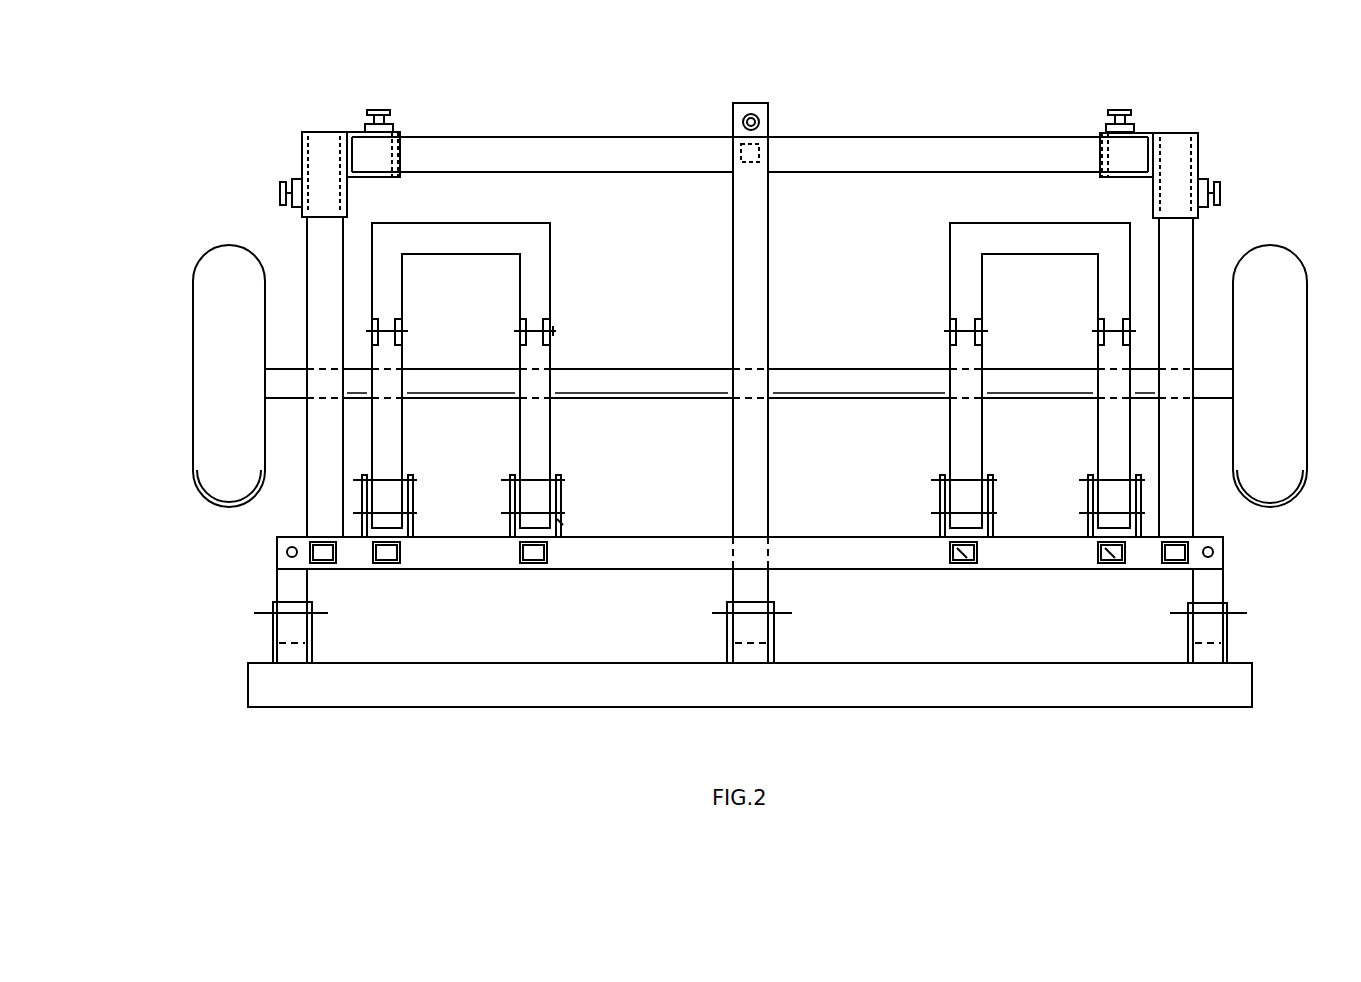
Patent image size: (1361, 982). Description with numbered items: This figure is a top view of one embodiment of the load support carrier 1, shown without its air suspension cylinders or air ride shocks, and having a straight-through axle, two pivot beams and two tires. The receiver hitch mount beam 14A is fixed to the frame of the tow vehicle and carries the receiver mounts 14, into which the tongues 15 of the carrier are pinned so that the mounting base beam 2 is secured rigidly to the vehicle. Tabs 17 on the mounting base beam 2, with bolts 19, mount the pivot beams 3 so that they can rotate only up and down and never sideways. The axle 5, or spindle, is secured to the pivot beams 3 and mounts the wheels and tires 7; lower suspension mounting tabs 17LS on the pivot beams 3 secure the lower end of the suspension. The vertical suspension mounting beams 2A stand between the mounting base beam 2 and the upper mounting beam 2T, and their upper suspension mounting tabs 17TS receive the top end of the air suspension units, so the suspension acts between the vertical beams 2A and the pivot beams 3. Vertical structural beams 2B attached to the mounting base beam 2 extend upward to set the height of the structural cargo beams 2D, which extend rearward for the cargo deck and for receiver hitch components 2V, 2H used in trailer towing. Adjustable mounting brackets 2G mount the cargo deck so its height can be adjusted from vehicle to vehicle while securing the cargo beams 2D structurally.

The implement cart assembly 1 is at (958, 92).
The mounting base beam 2 is at (840, 566).
The vertical suspension mounting beam 2A is at (412, 572).
The vertical structural beam 2B is at (330, 572).
The structural cargo beam 2D is at (307, 257).
The adjustable mounting bracket 2G is at (302, 140).
The receiver hitch 2H is at (733, 262).
The upper mounting beam 2T is at (712, 555).
The receiver hitch beam 2V is at (755, 150).
The pivot beam 3 is at (550, 268).
The axle 5 is at (853, 369).
The wheel and tire 7 is at (240, 380).
The receiver mount 14 is at (270, 638).
The receiver hitch mount beam 14A is at (838, 701).
The tongue 15 is at (766, 583).
The tab 17 is at (560, 470).
The lower suspension mounting tab 17LS is at (515, 335).
The upper suspension mounting tab 17TS is at (510, 500).
The bolt 19 is at (553, 333).